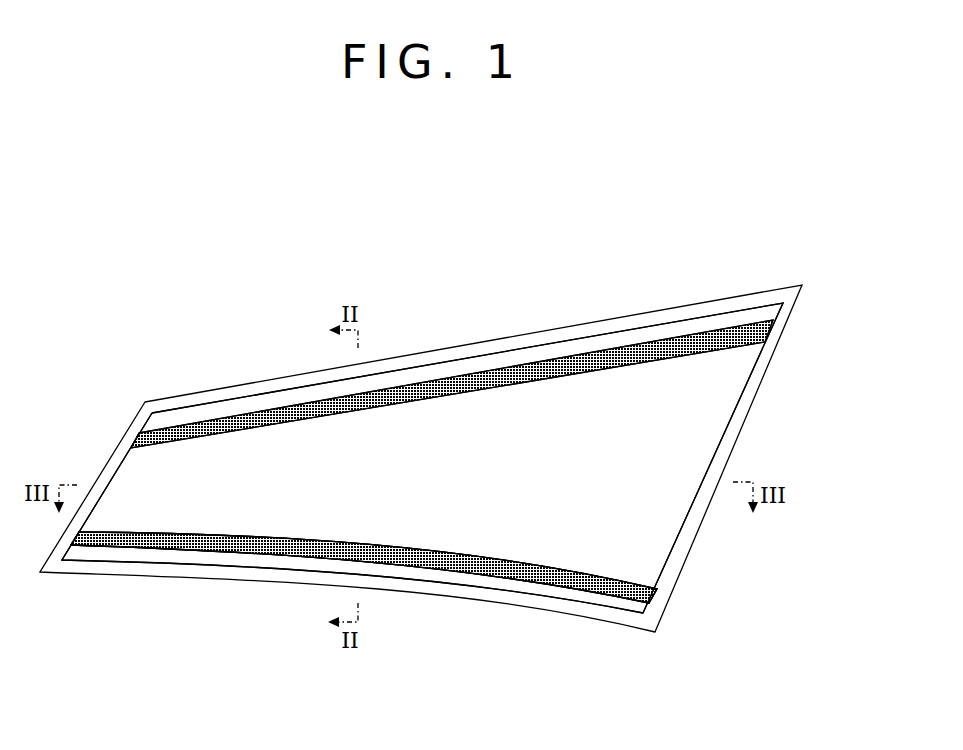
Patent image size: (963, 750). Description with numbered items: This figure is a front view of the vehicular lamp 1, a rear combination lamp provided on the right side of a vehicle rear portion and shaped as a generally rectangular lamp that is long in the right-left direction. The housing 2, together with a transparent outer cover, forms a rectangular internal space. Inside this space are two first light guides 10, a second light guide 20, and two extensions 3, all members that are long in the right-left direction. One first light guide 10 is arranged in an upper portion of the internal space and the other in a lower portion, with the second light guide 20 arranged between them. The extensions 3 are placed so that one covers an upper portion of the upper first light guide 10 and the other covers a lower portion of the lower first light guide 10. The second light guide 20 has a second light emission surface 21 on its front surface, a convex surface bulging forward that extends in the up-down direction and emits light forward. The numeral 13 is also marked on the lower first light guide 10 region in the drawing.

The vehicular lamp 1 is at (528, 281).
The housing 2 is at (137, 424).
The extension 3 is at (605, 345).
The first light guide 10 is at (768, 330).
The end portion of light shielding portion 13 is at (464, 568).
The second light guide 20 is at (722, 405).
The second light emission surface 21 is at (410, 520).